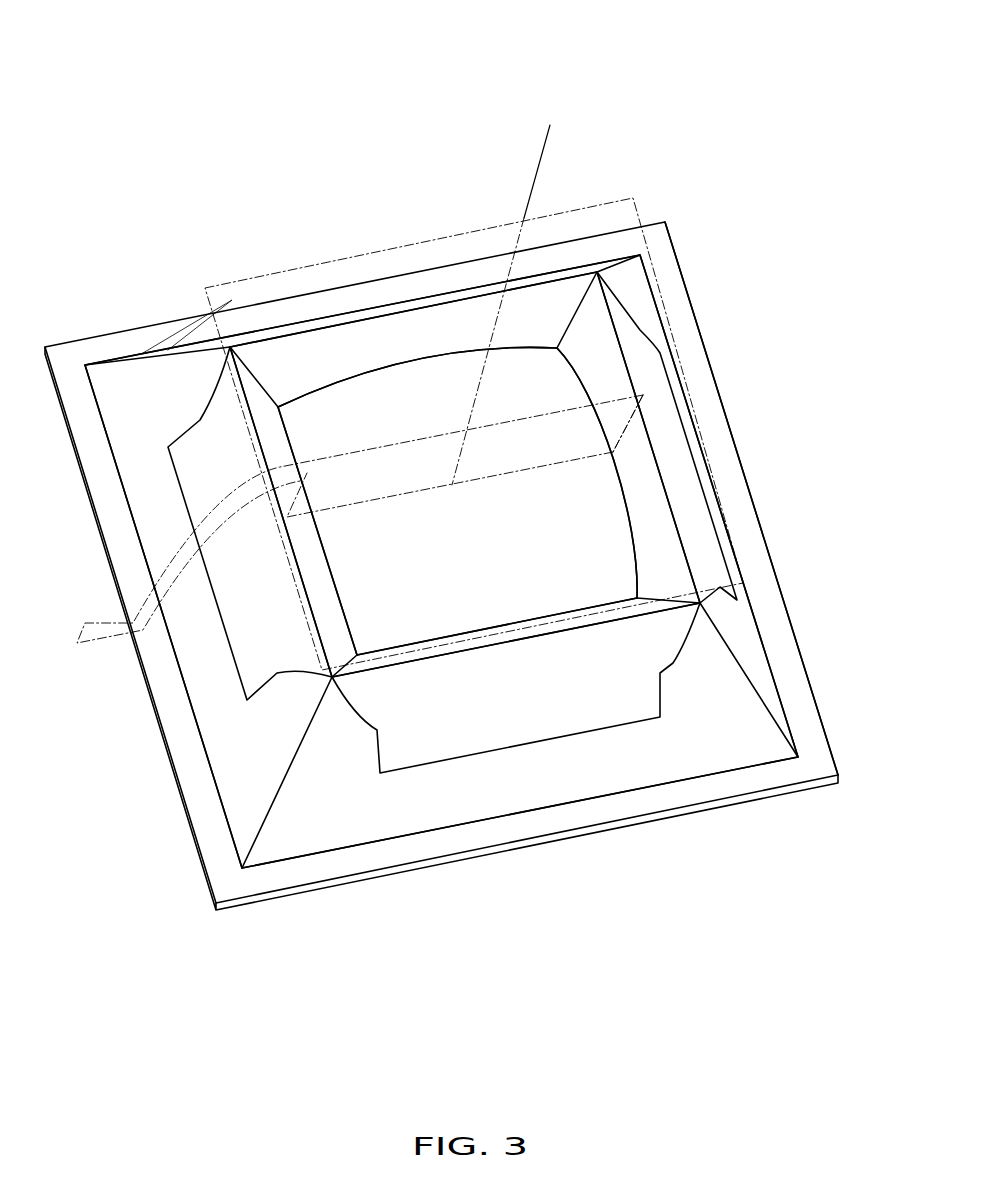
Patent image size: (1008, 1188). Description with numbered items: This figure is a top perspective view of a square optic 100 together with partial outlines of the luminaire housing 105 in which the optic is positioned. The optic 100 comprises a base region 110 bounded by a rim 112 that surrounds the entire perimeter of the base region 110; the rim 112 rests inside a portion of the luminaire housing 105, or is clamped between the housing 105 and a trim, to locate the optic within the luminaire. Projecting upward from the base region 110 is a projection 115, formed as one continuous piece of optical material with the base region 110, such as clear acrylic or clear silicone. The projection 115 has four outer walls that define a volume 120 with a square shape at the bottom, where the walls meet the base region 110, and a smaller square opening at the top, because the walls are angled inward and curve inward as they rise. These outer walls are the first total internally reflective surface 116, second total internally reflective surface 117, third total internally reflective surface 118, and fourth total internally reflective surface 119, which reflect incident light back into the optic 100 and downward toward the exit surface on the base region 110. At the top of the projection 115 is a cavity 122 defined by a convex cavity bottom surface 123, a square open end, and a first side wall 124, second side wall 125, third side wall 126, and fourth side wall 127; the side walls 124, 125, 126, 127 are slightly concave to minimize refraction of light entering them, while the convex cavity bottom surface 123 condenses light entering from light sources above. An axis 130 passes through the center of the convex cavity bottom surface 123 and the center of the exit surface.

The square optic 100 is at (772, 116).
The housing 105 is at (230, 500).
The base region 110 is at (848, 686).
The rim 112 is at (792, 653).
The projection 115 is at (806, 472).
The first total internally reflective surface 116 is at (652, 312).
The second total internally reflective surface 117 is at (430, 300).
The third total internally reflective surface 118 is at (108, 417).
The fourth total internally reflective surface 119 is at (335, 815).
The volume 120 is at (478, 714).
The cavity 122 is at (590, 505).
The convex cavity bottom surface 123 is at (420, 569).
The first side wall 124 is at (648, 539).
The second side wall 125 is at (388, 347).
The third side wall 126 is at (273, 433).
The fourth side wall 127 is at (407, 660).
The axis 130 is at (546, 152).